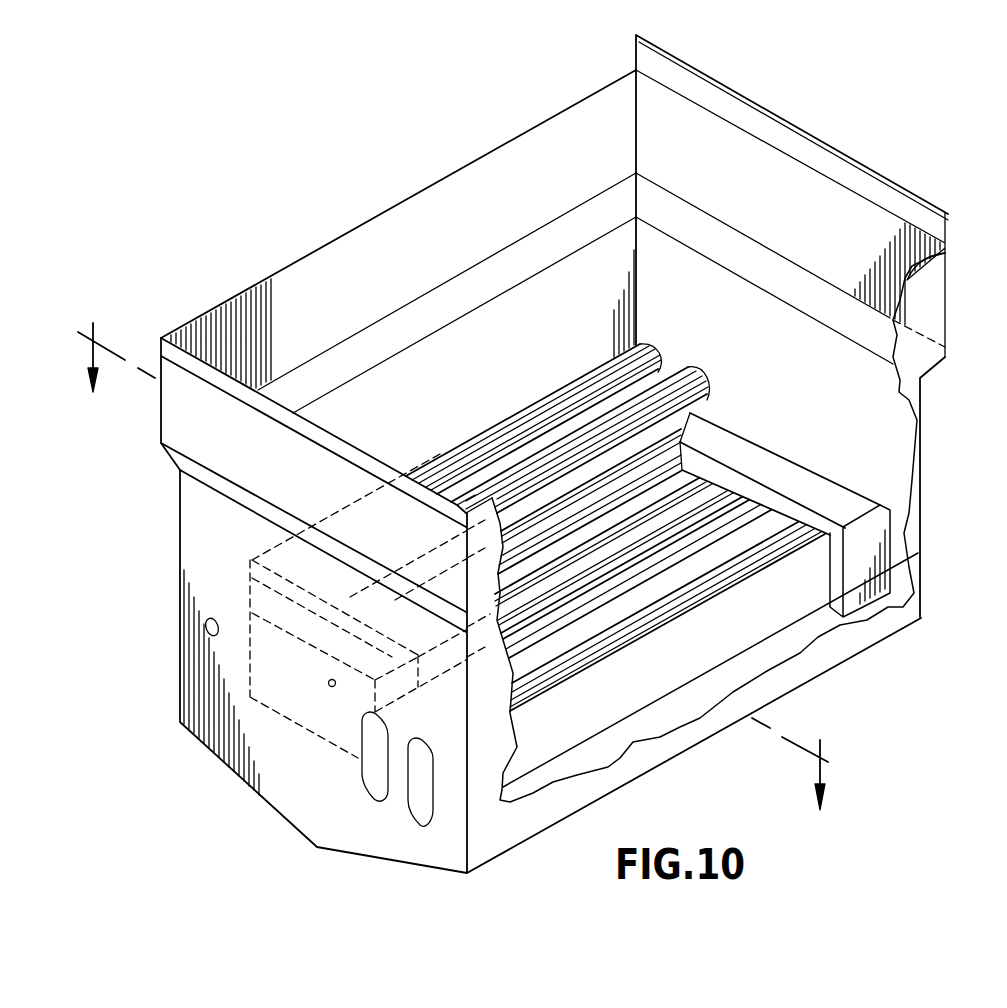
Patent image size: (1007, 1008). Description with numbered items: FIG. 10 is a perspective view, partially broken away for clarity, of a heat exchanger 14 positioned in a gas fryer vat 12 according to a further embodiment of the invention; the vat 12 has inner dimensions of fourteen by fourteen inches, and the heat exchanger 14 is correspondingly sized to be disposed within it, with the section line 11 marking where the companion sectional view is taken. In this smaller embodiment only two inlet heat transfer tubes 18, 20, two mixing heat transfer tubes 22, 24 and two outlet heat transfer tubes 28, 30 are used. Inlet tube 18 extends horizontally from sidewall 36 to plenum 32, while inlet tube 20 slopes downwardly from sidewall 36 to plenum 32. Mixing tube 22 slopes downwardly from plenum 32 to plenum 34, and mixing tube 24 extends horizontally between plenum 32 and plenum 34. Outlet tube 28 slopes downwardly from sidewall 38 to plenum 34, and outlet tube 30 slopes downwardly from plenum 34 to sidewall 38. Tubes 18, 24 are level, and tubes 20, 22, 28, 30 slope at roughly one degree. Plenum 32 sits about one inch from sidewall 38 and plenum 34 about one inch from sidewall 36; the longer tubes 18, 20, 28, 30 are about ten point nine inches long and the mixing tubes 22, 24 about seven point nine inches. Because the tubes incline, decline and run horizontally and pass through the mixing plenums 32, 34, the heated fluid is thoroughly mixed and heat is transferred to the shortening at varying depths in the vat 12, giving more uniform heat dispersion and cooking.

The vat 12 is at (770, 177).
The heat exchanger 14 is at (854, 477).
The inlet heat transfer tube 18 is at (765, 625).
The inlet heat transfer tube 20 is at (623, 593).
The mixing heat transfer tube 22 is at (706, 478).
The mixing heat transfer tube 24 is at (665, 460).
The outlet heat transfer tube 28 is at (533, 417).
The outlet heat transfer tube 30 is at (627, 420).
The plenum 32 is at (758, 435).
The plenum 34 is at (273, 693).
The sidewall 36 is at (327, 808).
The sidewall 38 is at (422, 235).
The section line 11- 11 is at (453, 566).